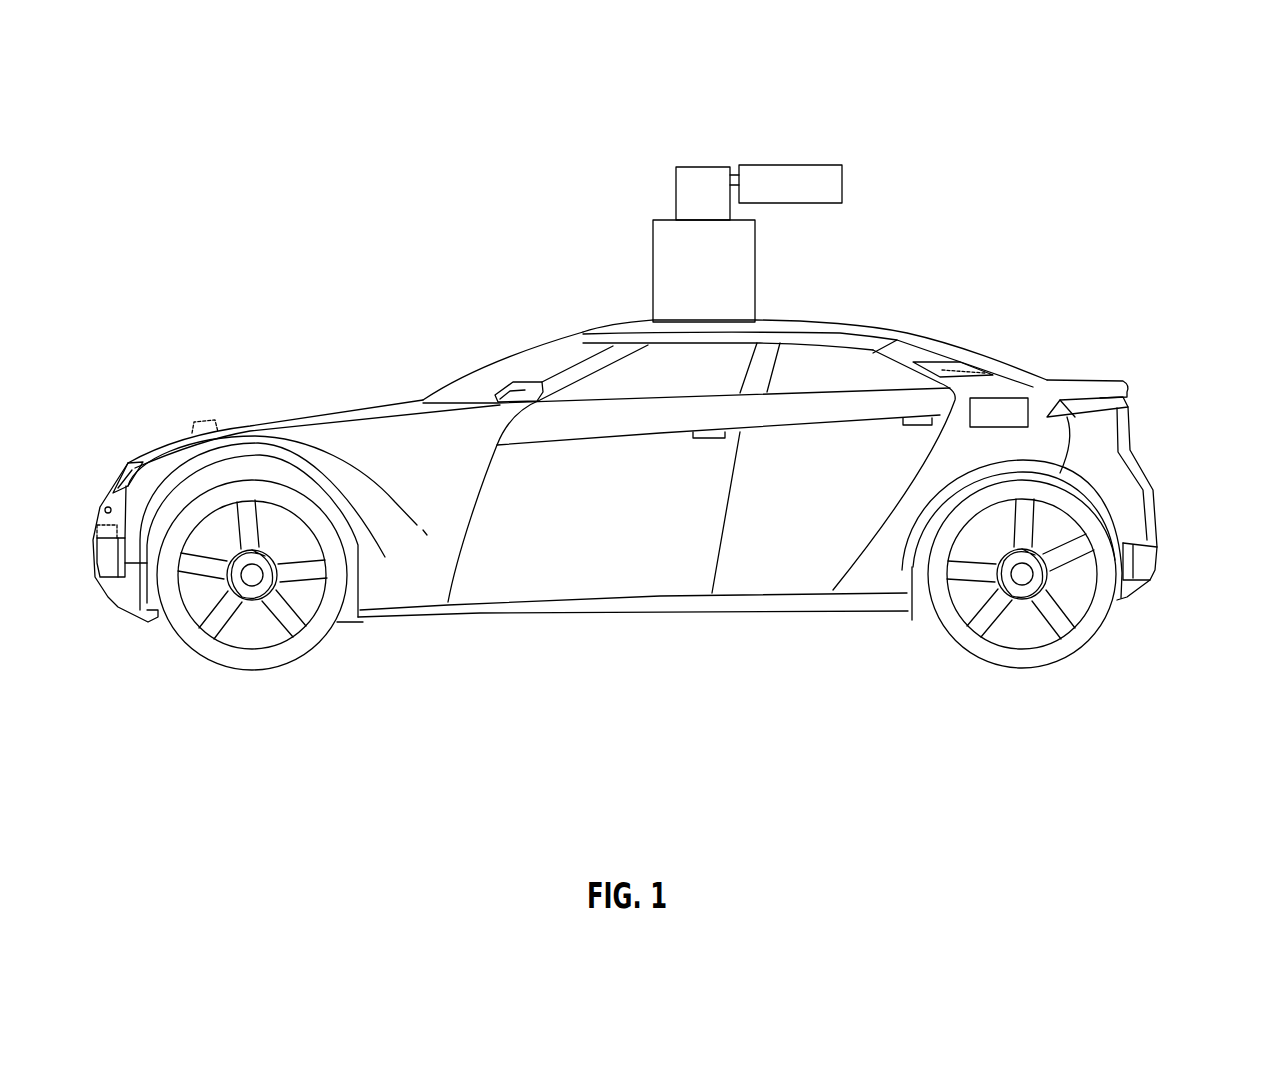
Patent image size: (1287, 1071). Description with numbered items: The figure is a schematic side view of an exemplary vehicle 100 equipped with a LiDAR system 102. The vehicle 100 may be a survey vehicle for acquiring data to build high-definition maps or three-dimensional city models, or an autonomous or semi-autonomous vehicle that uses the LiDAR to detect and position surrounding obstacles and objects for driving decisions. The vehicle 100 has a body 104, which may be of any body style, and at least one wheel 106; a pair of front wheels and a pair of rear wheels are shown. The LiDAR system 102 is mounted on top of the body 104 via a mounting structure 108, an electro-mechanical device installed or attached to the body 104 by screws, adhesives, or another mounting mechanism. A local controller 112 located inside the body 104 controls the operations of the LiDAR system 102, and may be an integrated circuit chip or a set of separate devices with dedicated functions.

The vehicle 100 is at (719, 750).
The LiDAR system 102 is at (762, 135).
The body 104 is at (513, 299).
The wheel 106 is at (1136, 632).
The mounting structure 108 is at (763, 288).
The local controller 112 is at (1030, 393).